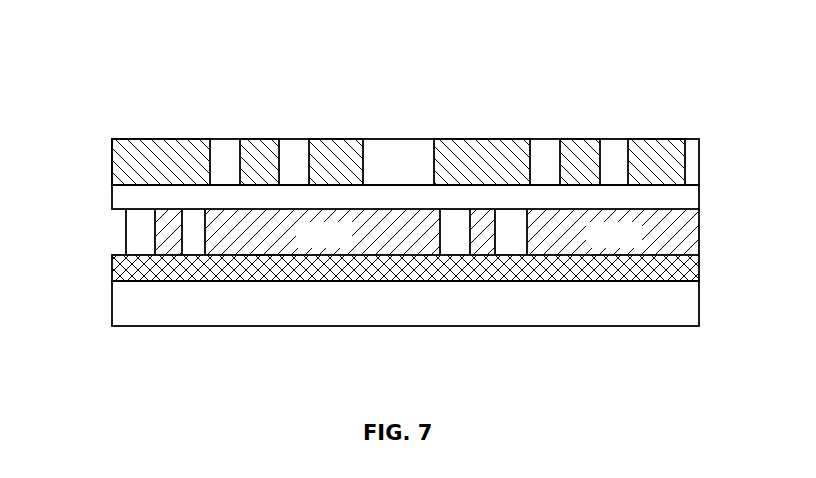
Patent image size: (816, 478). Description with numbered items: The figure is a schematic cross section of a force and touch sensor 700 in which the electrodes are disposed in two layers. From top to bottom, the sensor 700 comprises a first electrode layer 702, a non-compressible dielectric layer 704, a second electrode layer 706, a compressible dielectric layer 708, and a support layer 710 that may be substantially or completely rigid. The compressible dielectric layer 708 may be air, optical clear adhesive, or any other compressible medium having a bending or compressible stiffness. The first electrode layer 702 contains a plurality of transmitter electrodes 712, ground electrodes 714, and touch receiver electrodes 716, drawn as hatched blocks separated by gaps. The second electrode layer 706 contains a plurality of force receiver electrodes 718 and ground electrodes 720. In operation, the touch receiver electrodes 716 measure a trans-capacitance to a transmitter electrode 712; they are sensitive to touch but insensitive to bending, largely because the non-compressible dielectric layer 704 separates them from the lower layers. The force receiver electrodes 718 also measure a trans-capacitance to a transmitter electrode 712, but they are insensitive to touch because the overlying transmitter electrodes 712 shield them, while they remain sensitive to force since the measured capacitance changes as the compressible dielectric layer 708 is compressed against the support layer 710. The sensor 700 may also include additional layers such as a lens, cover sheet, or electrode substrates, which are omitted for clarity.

The force and touch sensor 700 is at (164, 36).
The first electrode layer 702 is at (699, 162).
The non-compressible dielectric layer 704 is at (699, 196).
The second electrode layer 706 is at (699, 232).
The compressible dielectric layer 708 is at (699, 266).
The support layer 710 is at (699, 302).
The transmitter electrodes 712 is at (138, 138).
The ground electrodes 714 is at (240, 152).
The touch receiver electrodes 716 is at (313, 139).
The force receiver electrodes 718 is at (168, 238).
The ground electrodes 720 is at (267, 257).